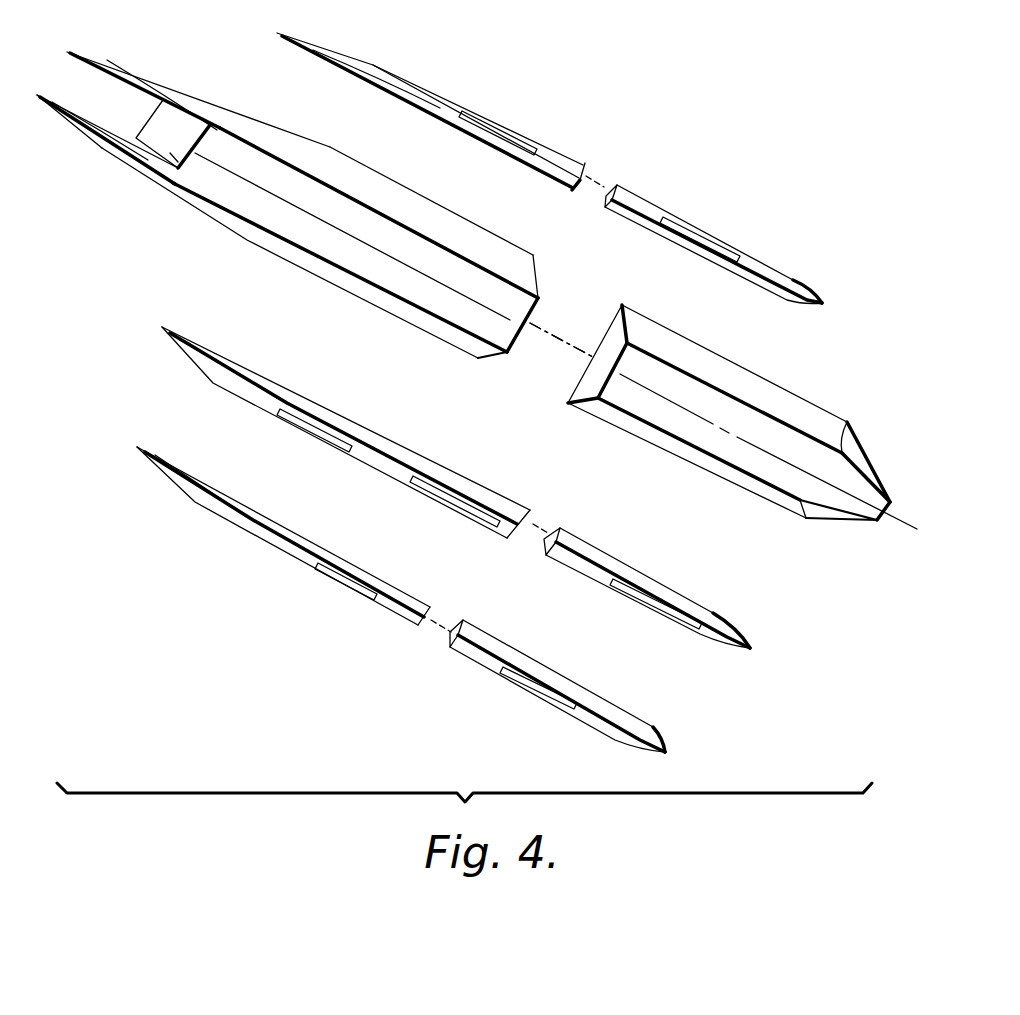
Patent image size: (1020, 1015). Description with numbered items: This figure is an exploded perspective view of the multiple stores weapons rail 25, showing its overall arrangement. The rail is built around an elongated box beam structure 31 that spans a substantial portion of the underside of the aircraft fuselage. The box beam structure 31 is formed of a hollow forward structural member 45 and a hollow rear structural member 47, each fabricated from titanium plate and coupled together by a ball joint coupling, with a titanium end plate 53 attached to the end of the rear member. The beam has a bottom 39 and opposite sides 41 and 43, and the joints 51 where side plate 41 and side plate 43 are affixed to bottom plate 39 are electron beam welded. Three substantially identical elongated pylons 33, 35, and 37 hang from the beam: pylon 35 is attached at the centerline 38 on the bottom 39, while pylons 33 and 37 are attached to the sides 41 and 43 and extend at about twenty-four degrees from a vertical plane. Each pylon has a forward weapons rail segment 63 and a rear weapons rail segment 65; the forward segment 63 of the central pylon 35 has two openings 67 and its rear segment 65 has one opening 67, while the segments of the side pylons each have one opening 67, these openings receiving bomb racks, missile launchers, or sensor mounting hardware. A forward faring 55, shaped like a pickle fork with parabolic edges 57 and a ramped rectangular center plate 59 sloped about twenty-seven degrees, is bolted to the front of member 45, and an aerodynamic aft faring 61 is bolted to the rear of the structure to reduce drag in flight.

The multiple stores weapons rail 25 is at (646, 167).
The box beam structure 31 is at (332, 287).
The pylon 33 is at (433, 85).
The pylon 35 is at (212, 382).
The pylon 37 is at (195, 502).
The centerline 38 is at (277, 155).
The bottom 39 is at (273, 212).
The side 41 is at (465, 237).
The side 43 is at (413, 315).
The forward structural member 45 is at (402, 247).
The rear structural member 47 is at (777, 472).
The joints 51 is at (350, 187).
The end plate 53 is at (592, 375).
The forward faring 55 is at (110, 148).
The parabolic edges 57 is at (140, 70).
The ramped rectangular shaped center plate 59 is at (173, 180).
The aft/rear faring 61 is at (857, 455).
The forward weapons rail segment 63 is at (560, 158).
The rear weapons rail segment 65 is at (770, 267).
The opening 67 is at (500, 125).